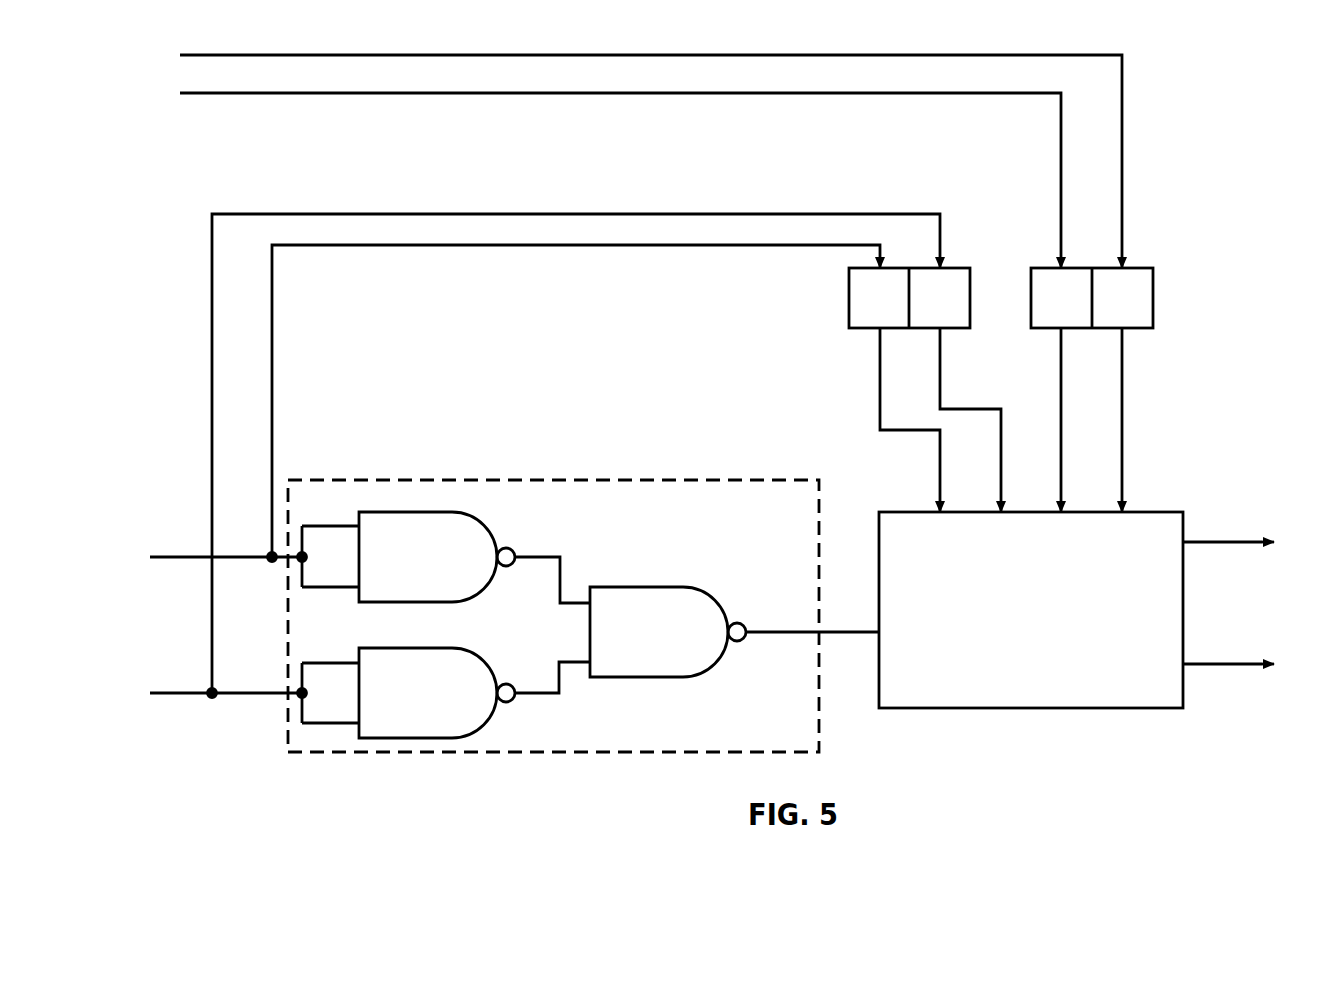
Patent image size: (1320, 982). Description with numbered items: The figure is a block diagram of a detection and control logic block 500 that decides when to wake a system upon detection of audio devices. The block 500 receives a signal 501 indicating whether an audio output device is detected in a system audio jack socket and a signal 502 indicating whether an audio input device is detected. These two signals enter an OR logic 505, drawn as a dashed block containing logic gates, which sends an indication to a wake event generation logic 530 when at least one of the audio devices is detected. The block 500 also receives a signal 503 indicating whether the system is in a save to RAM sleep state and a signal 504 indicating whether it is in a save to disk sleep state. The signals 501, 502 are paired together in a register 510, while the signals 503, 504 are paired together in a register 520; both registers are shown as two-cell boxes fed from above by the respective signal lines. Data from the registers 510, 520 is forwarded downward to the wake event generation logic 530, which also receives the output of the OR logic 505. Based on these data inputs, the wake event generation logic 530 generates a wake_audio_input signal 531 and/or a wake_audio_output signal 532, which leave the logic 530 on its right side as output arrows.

The detection and control logic block 500 is at (564, 192).
The audio output device detection signal 501 is at (228, 677).
The audio input device detection signal 502 is at (228, 542).
The save to RAM sleep state signal 503 is at (620, 180).
The save to disk sleep state signal 504 is at (651, 150).
The OR logic 505 is at (654, 480).
The register 510 is at (849, 300).
The register 520 is at (1153, 300).
The wake event generation logic 530 is at (1031, 610).
The wake_audio_input signal 531 is at (1228, 527).
The wake_audio_output signal 532 is at (1228, 647).